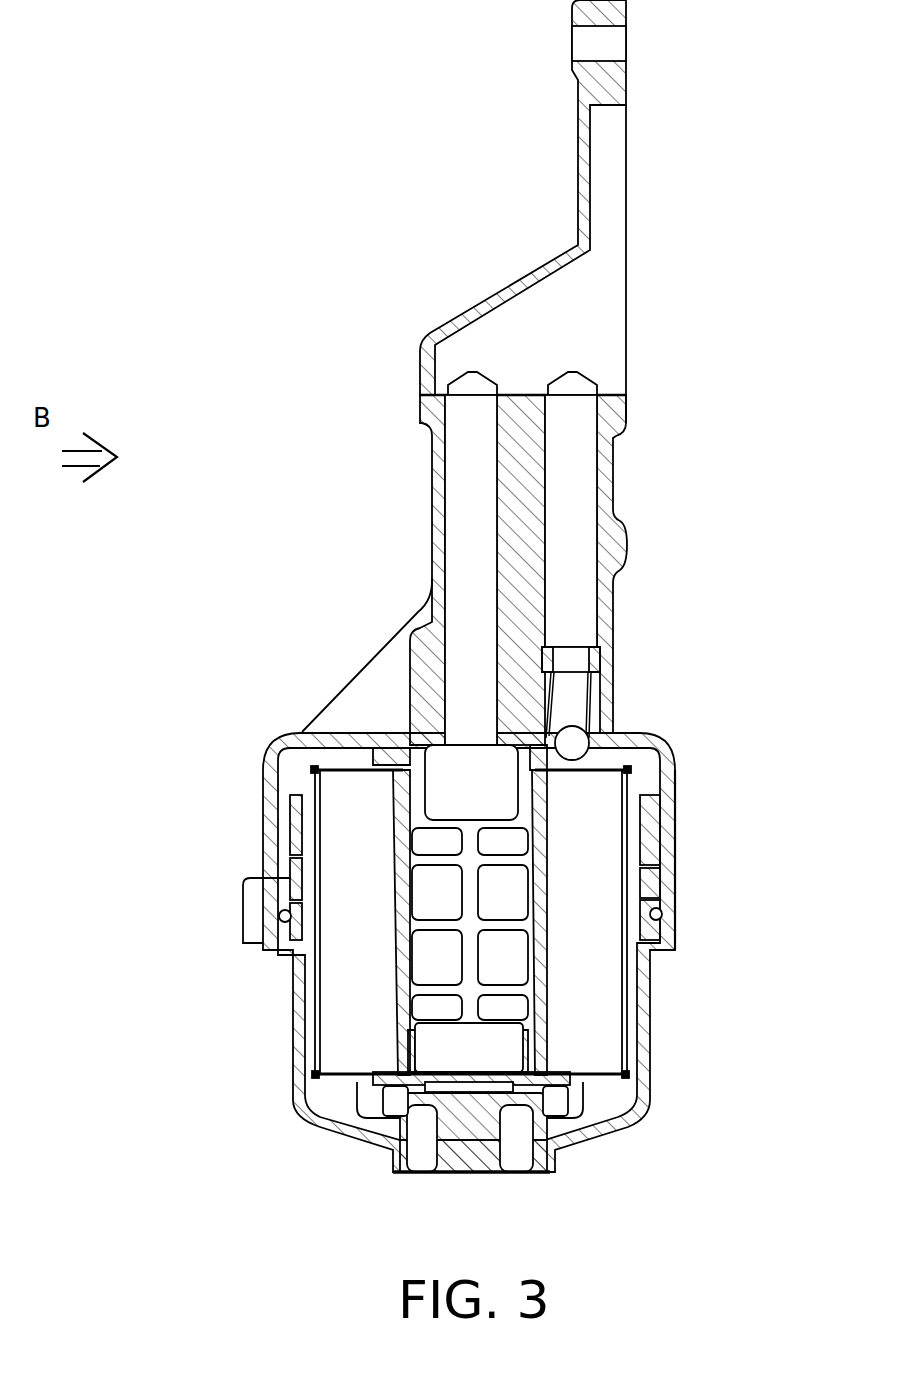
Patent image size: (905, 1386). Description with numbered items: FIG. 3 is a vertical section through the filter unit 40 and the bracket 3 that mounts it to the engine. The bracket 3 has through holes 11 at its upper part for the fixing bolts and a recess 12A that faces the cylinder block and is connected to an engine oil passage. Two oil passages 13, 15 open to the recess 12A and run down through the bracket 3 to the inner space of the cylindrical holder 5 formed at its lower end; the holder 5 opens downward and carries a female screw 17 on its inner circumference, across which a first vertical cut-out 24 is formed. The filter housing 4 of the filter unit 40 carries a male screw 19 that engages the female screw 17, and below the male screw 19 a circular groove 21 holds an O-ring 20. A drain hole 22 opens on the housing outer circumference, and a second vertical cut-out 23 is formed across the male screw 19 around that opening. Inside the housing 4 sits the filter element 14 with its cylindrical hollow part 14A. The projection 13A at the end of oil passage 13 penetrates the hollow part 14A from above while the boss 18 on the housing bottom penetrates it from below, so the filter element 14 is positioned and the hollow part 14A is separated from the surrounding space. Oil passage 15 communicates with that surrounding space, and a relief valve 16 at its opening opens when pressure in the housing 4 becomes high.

The bracket 3 is at (620, 545).
The filter housing 4 is at (650, 1040).
The cylindrical holder 5 is at (672, 838).
The through hole 11 is at (615, 52).
The recess 12A is at (600, 312).
The oil passage 13 is at (465, 505).
The projection 13A is at (418, 792).
The filter element 14 is at (335, 1020).
The cylindrical hollow part 14A is at (505, 963).
The oil passage 15 is at (580, 478).
The relief valve 16 is at (582, 745).
The female screw 17 is at (655, 815).
The boss 18 is at (490, 1055).
The male screw 19 is at (668, 880).
The O-ring 20 is at (668, 915).
The circular groove 21 is at (285, 918).
The drain hole 22 is at (295, 838).
The vertical cut-out 23 is at (295, 872).
The vertical cut-out 24 is at (300, 883).
The filter unit 40 is at (652, 1082).